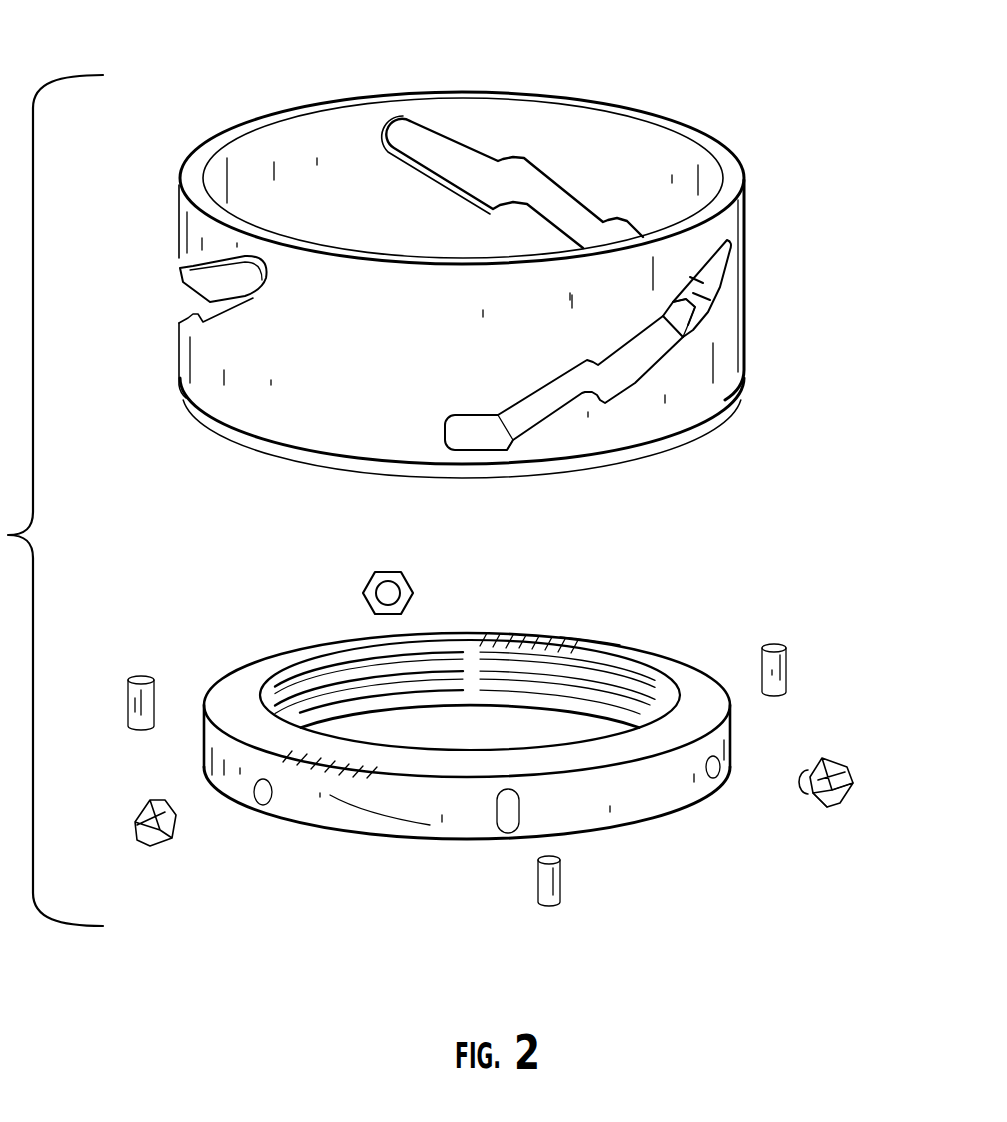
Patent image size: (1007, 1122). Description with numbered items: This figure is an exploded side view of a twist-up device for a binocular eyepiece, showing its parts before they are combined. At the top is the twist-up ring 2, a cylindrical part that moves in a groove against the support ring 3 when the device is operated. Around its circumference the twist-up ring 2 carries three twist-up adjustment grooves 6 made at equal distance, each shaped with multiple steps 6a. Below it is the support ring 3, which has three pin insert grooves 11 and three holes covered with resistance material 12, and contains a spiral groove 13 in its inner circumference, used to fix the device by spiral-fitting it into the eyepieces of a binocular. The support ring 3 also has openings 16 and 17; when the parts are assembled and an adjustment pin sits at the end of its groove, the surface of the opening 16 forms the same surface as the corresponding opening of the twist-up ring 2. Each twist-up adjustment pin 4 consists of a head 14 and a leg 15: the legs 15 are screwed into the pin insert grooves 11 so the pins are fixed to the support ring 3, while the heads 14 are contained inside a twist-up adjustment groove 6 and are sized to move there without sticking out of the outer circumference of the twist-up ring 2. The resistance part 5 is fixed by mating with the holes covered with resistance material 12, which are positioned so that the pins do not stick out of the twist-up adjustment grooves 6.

The twist-up ring 2 is at (748, 300).
The support ring 3 is at (395, 815).
The twist-up adjustment pin 4 is at (413, 597).
The resistance part 5 is at (128, 703).
The twist-up adjustment groove 6 is at (455, 160).
The step 6a is at (720, 410).
The pin insert groove 11 is at (265, 805).
The hole covered with resistance material 12 is at (503, 830).
The spiral groove 13 is at (610, 662).
The head 14 is at (850, 795).
The leg 15 is at (817, 792).
The opening 16 is at (275, 680).
The opening 17 is at (445, 840).